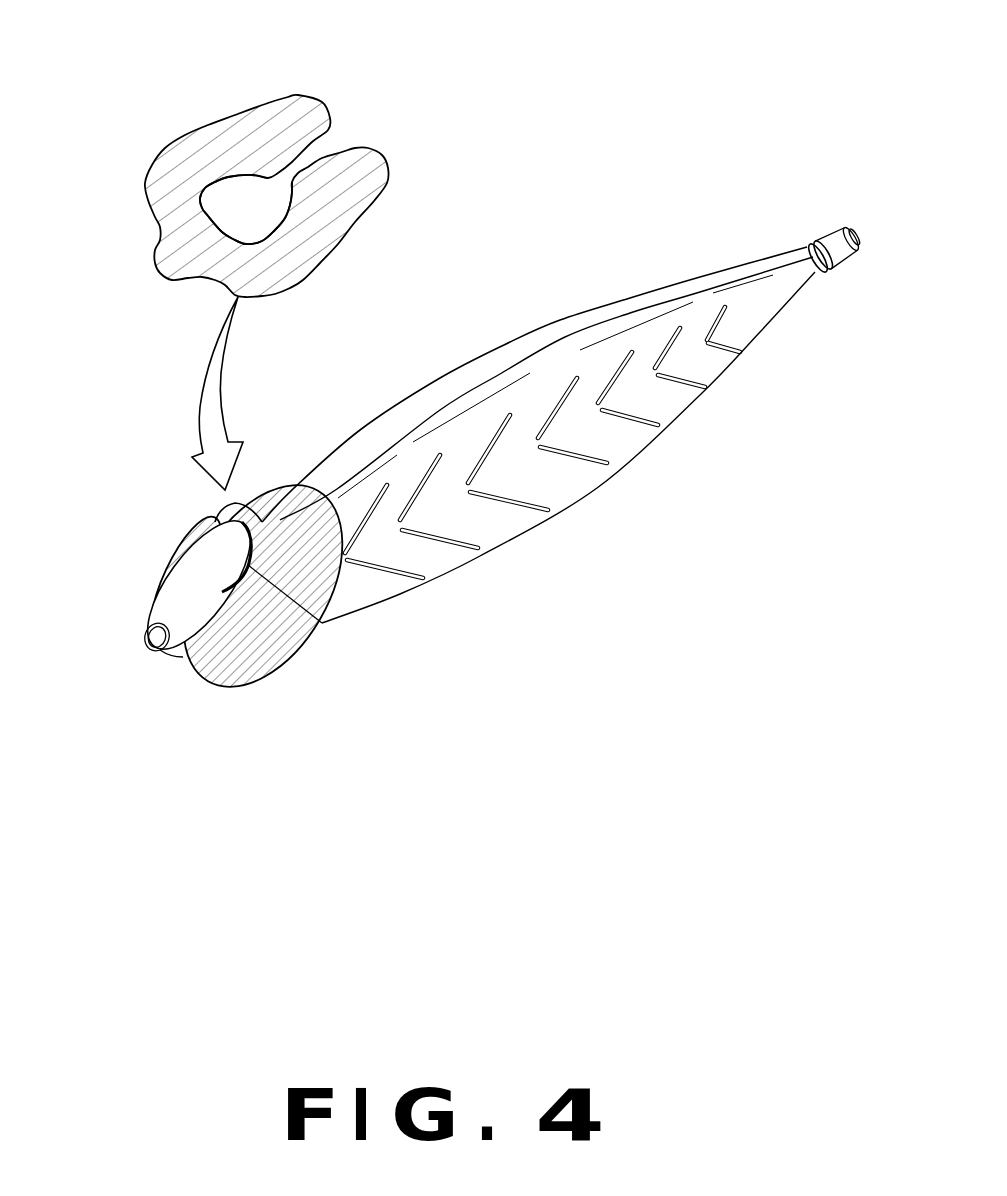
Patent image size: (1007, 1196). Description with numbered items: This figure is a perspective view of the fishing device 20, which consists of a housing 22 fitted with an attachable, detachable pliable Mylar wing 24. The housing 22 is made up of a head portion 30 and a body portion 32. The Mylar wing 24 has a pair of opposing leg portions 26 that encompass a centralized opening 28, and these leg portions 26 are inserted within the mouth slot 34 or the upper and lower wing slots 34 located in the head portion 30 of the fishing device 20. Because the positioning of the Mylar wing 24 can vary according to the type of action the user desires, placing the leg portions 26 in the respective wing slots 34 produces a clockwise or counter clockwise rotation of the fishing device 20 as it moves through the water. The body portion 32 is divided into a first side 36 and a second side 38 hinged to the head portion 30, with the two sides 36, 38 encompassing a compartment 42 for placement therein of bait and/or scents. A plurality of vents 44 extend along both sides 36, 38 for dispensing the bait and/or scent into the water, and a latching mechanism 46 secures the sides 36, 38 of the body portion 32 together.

The fishing device 20 is at (563, 277).
The housing 22 is at (630, 297).
The pliable Mylar wing 24 is at (222, 120).
The leg portions 26 is at (305, 112).
The centralized opening 28 is at (228, 218).
The head portion 30 is at (172, 592).
The body portion 32 is at (697, 262).
The wing slots 34 is at (320, 623).
The first side 36 is at (437, 393).
The second side 38 is at (615, 442).
The compartment 42 is at (681, 397).
The vents 44 is at (585, 462).
The latching mechanism 46 is at (827, 227).